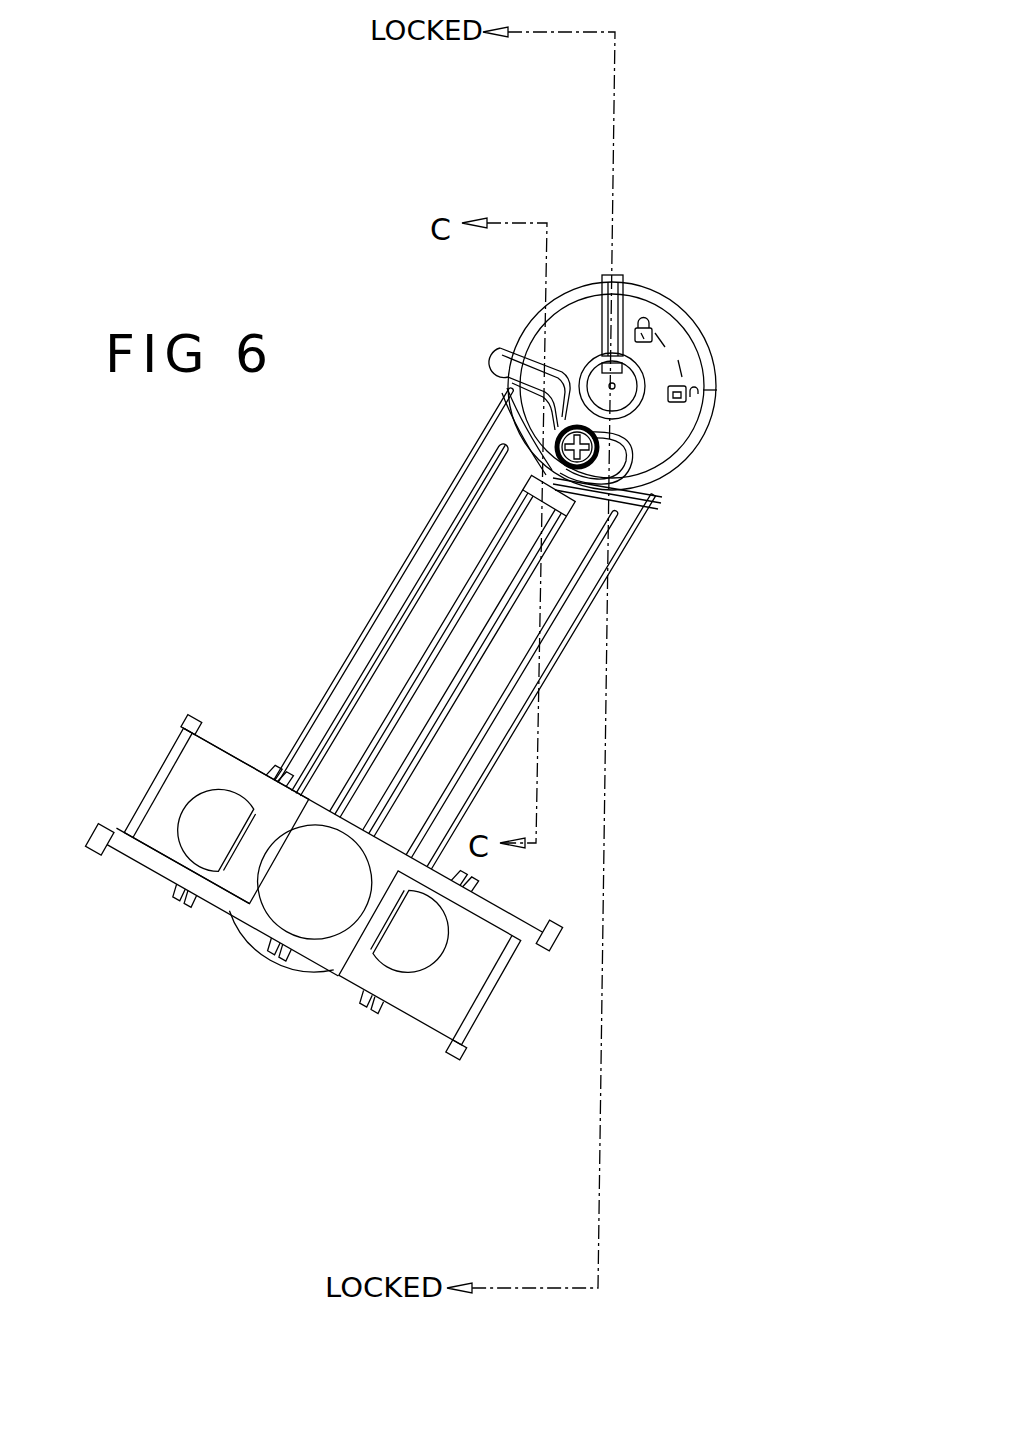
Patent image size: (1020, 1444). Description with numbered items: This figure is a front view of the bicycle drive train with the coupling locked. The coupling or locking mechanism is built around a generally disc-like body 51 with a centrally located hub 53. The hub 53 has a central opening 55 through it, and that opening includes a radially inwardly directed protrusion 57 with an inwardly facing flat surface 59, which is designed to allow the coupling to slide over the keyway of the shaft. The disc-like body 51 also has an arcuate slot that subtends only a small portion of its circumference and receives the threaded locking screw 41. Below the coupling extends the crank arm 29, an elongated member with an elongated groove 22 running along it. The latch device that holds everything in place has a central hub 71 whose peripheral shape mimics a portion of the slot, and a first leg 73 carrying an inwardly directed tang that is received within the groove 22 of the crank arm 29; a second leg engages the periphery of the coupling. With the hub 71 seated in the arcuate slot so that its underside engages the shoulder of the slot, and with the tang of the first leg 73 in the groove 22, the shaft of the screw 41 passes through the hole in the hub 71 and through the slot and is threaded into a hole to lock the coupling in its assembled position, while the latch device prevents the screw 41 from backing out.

The disc-like body 51 is at (669, 303).
The radially inwardly directed protrusion 57 is at (621, 371).
The central opening 55 is at (623, 387).
The inwardly facing flat surface 59 is at (613, 388).
The hub 53 is at (537, 325).
The central hub 71 is at (650, 490).
The locking screw 41 is at (583, 449).
The elongated groove 22 is at (511, 554).
The crank arm 29 is at (422, 528).
The first leg 73 is at (553, 490).